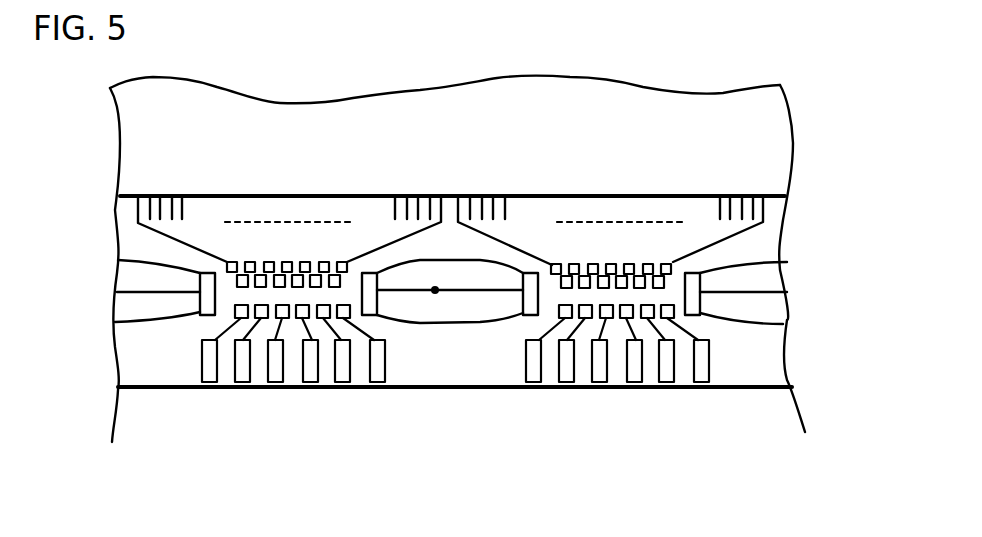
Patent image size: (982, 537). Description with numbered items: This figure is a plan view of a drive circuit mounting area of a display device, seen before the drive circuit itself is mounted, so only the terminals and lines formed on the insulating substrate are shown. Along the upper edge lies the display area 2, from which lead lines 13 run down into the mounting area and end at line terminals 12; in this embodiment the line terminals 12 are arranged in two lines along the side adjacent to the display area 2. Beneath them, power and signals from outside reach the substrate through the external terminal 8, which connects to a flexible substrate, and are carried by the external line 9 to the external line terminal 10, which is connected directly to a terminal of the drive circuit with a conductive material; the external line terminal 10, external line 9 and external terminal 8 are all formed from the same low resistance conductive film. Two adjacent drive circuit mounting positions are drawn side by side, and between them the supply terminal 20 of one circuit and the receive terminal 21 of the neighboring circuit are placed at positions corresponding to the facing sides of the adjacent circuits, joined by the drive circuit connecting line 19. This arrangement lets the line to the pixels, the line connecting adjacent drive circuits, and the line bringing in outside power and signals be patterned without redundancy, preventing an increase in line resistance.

The display area 2 is at (752, 173).
The external terminal 8 is at (311, 385).
The external line 9 is at (365, 335).
The external line terminal 10 is at (208, 343).
The line terminal 12 is at (248, 262).
The lead line 13 is at (165, 252).
The drive circuit connecting line 19 is at (435, 290).
The supply terminal 20 is at (388, 383).
The receive terminal 21 is at (203, 316).